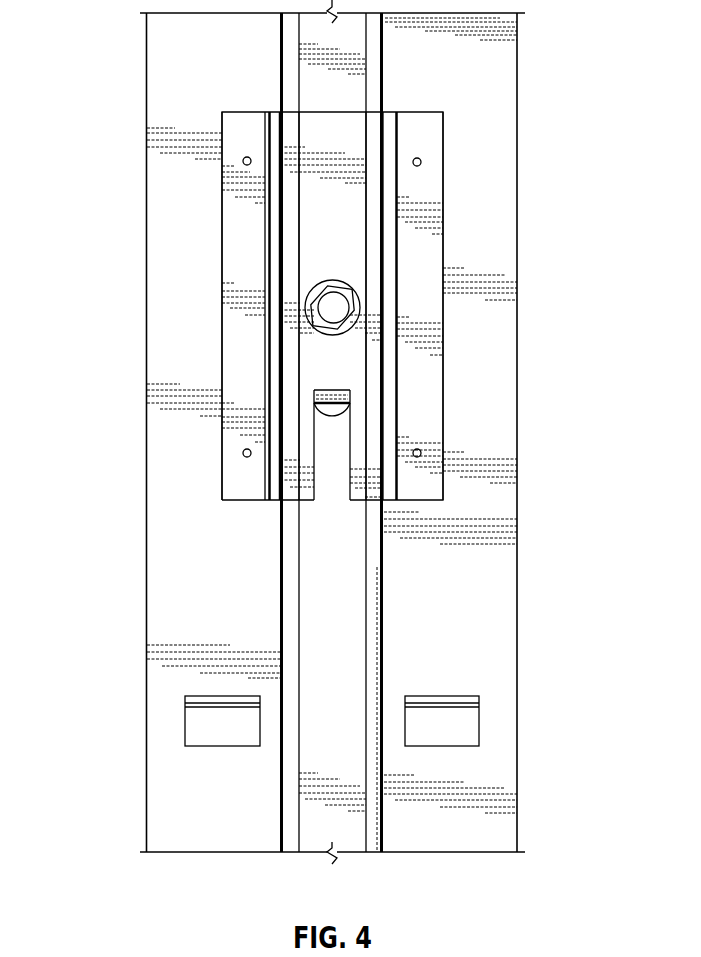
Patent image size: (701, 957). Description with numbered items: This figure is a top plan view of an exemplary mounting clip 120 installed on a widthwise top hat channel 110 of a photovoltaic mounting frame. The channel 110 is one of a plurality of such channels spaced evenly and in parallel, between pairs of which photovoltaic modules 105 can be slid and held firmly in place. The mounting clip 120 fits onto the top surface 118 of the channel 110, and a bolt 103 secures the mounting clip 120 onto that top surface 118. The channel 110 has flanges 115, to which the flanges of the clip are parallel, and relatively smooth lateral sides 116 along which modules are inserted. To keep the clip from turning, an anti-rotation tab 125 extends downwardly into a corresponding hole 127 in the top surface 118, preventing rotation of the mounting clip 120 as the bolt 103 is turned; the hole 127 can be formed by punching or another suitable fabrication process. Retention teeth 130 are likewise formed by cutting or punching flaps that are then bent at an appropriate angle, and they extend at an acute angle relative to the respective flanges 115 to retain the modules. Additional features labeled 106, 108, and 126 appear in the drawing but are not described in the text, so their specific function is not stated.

The bolt 103 is at (332, 297).
The photovoltaic module 105 is at (232, 264).
The bracket plate side edge 106 is at (268, 369).
The bracket plate web 108 is at (294, 239).
The top hat channel 110 is at (127, 69).
The flanges 115 is at (160, 600).
The lateral sides 116 is at (282, 583).
The top surface 118 is at (308, 85).
The mounting clip 120 is at (450, 215).
The anti-rotation tab 125 is at (327, 390).
The slot 126 is at (333, 480).
The hole 127 is at (338, 415).
The retention teeth 130 is at (185, 703).